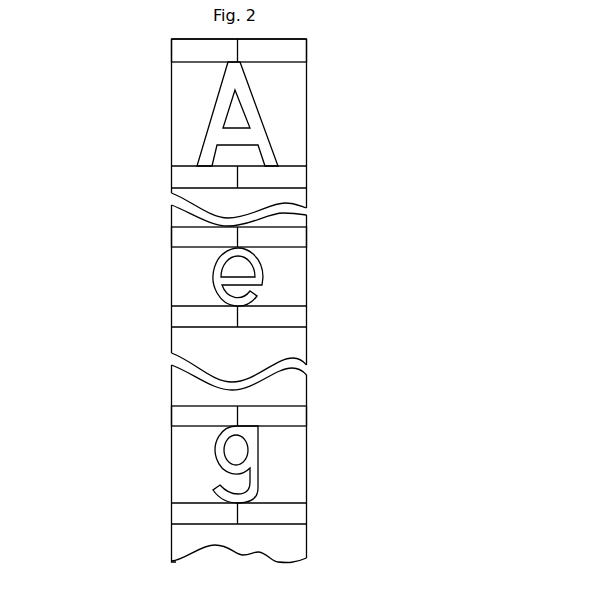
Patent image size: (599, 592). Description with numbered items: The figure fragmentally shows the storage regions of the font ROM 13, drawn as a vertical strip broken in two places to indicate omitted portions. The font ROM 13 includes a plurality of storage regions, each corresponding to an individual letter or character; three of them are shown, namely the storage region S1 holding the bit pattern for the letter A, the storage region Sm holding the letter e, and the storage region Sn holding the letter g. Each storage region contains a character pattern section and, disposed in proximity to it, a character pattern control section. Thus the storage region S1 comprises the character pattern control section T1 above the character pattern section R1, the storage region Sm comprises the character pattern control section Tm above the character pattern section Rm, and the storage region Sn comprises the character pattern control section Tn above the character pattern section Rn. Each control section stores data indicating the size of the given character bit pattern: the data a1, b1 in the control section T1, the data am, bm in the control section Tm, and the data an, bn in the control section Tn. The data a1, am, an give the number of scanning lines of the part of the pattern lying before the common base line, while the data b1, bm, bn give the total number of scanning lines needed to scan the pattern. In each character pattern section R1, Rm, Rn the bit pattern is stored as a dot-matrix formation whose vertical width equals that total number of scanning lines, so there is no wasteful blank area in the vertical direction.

The font ROM 13 is at (167, 120).
The character pattern control section T1 is at (261, 50).
The character pattern section R1 is at (300, 123).
The storage region S1 is at (355, 37).
The data a a1 is at (203, 50).
The data b b1 is at (272, 50).
The character pattern control section Tm is at (264, 238).
The character pattern section Rm is at (298, 290).
The storage region Sm is at (358, 222).
The data a am is at (204, 238).
The data b bm is at (272, 238).
The character pattern control section Tn is at (263, 417).
The character pattern section Rn is at (300, 478).
The storage region Sn is at (362, 402).
The data a an is at (204, 417).
The data b bn is at (272, 417).